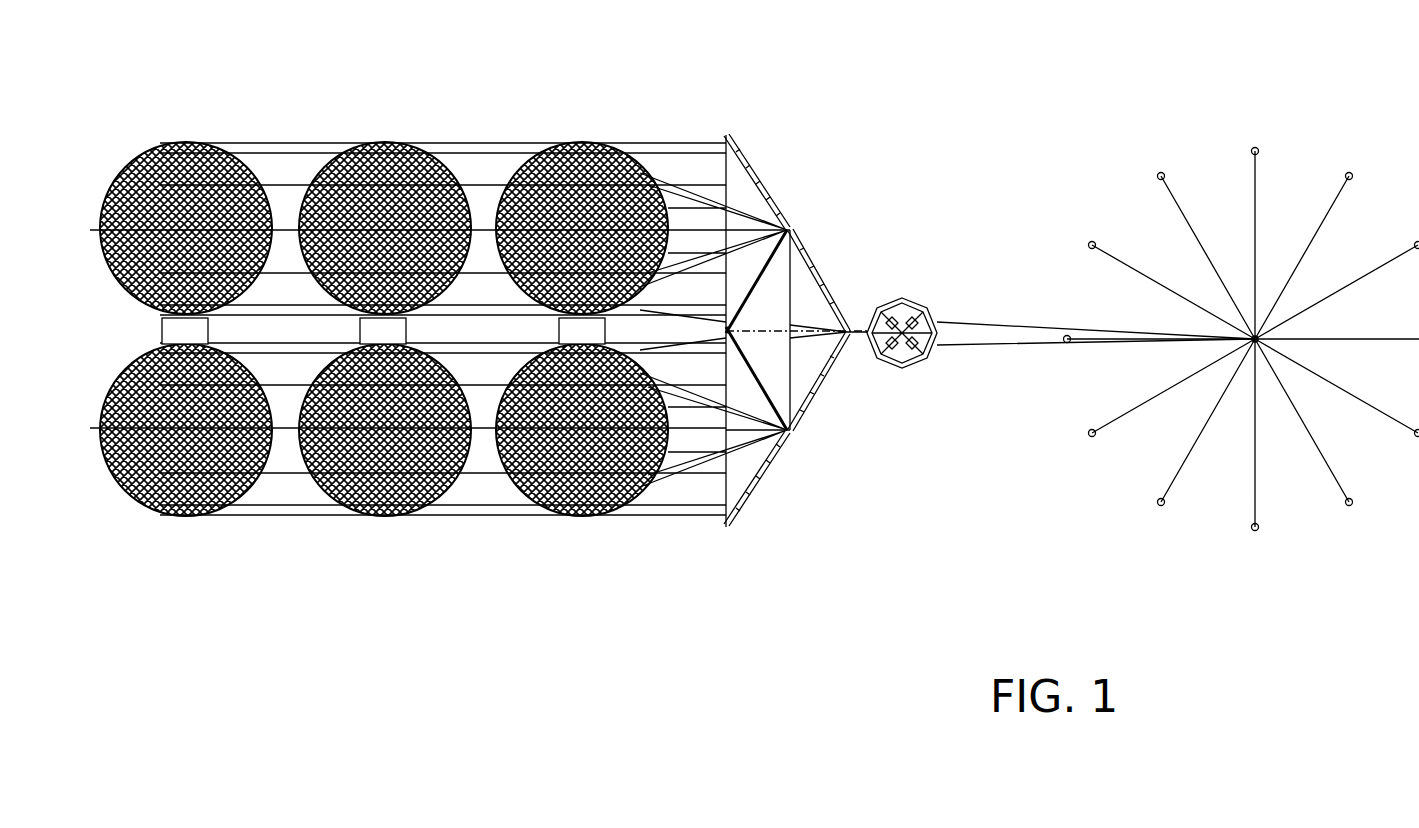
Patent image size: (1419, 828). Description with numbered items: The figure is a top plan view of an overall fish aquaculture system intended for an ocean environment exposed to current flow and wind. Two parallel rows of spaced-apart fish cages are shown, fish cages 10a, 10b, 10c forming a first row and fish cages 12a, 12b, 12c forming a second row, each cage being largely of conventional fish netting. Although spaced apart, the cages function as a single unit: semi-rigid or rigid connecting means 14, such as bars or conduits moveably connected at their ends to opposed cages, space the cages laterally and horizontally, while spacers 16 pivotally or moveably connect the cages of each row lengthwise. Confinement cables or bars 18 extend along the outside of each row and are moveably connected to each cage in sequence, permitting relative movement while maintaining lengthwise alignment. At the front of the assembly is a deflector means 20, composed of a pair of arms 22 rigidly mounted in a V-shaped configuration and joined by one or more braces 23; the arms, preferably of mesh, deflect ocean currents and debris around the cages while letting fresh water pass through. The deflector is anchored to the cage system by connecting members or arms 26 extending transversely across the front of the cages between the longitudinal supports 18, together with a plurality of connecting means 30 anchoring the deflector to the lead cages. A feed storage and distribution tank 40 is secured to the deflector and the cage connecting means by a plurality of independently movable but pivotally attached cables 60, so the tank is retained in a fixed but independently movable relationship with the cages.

The fish cage 10a is at (603, 133).
The fish cage 10b is at (399, 133).
The fish cage 10c is at (202, 132).
The fish cage 12a is at (616, 527).
The fish cage 12b is at (400, 527).
The fish cage 12c is at (170, 522).
The connecting means 14 is at (160, 329).
The spacers 16 is at (273, 182).
The confinement cables or bars 18 is at (478, 140).
The deflector means 20 is at (832, 288).
The arms 22 is at (858, 320).
The braces 23 is at (828, 256).
The connecting members or arms 26 is at (745, 175).
The connecting means 30 is at (668, 163).
The feed storage and distribution tank 40 is at (945, 299).
The cables 60 is at (936, 297).